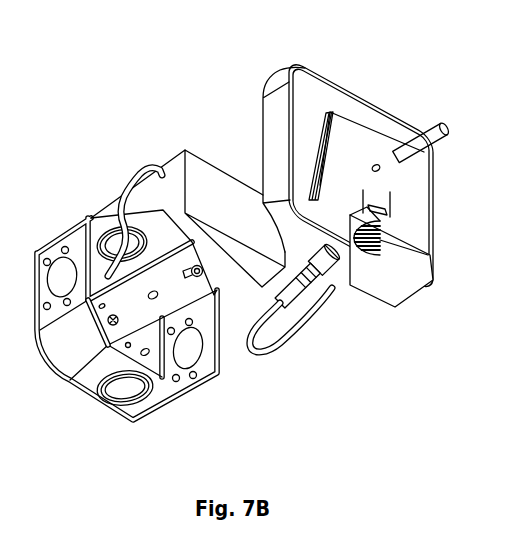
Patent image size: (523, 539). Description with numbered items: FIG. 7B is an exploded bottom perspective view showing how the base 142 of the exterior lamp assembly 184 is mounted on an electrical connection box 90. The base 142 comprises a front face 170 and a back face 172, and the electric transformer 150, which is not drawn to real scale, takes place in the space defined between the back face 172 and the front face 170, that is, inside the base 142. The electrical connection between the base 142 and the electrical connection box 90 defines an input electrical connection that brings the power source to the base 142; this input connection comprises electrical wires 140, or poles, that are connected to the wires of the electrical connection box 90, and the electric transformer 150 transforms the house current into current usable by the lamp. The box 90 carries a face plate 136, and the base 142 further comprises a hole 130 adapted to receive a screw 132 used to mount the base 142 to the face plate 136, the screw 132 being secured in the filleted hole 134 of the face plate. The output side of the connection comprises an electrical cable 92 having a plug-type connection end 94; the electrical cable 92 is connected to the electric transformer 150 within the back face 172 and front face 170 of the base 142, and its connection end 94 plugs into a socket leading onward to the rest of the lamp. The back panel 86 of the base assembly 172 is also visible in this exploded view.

The light fixture assembly 184 is at (172, 106).
The back face 172 is at (248, 81).
The base 142 is at (375, 97).
The front face 170 is at (387, 114).
The screw 132 is at (438, 121).
The hole 130 is at (381, 172).
The back panel 86 is at (412, 212).
The electric transformer 150 is at (220, 200).
The electrical wires 140 is at (127, 184).
The electrical connection box 90 is at (56, 241).
The filleted hole 134 is at (158, 301).
The face plate 136 is at (133, 318).
The connection end 94 is at (323, 259).
The electrical cable 92 is at (282, 342).